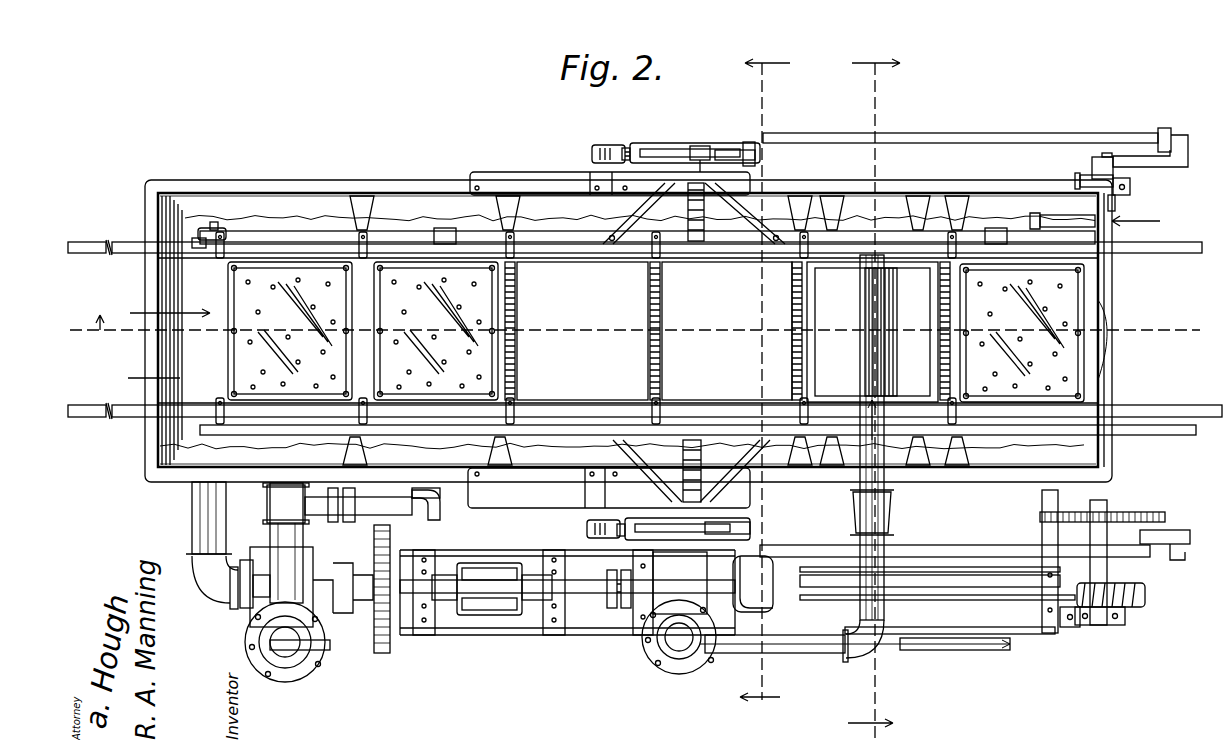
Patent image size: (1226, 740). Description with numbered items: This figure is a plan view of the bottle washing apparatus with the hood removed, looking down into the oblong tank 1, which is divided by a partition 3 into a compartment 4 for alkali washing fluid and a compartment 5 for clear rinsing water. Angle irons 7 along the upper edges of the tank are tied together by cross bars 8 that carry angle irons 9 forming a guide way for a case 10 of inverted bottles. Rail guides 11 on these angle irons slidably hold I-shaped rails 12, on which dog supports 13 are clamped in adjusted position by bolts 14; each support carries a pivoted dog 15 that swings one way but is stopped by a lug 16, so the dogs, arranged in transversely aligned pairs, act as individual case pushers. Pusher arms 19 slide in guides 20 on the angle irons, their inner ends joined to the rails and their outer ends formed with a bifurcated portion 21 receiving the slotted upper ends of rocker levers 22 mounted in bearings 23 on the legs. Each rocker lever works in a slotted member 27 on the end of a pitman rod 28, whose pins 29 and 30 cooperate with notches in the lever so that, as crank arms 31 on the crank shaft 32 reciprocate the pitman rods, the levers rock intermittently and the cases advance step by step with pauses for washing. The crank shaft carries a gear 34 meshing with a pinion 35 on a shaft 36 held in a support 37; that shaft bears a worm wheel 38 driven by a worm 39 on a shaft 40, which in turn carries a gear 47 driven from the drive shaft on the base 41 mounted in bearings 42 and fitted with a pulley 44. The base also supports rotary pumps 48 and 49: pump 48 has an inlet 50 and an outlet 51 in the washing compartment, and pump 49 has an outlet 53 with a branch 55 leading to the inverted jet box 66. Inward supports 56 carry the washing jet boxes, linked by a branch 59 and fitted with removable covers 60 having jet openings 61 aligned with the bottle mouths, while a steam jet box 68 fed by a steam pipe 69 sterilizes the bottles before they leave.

The tank 1 is at (180, 205).
The partition 3 is at (635, 330).
The compartment 4 is at (492, 382).
The compartment 5 is at (898, 206).
The angle irons 7 is at (400, 182).
The cross bars 8 is at (150, 358).
The angle irons 9 is at (76, 252).
The case 10 is at (810, 365).
The rail guides 11 is at (230, 238).
The rails 12 is at (300, 240).
The dog supports 13 is at (790, 240).
The bolts 14 is at (215, 228).
The dogs 15 is at (215, 250).
The lugs 16 is at (290, 232).
The pusher arms 19 is at (625, 213).
The guides 20 is at (515, 165).
The bifurcated portion 21 is at (700, 146).
The rocker levers 22 is at (592, 152).
The bearings 23 is at (610, 148).
The slotted member 27 is at (688, 145).
The pitman rods 28 is at (935, 140).
The pin 29 is at (644, 143).
The pin 30 is at (750, 148).
The crank arms 31 is at (1140, 158).
The crank shaft 32 is at (1105, 153).
The gear 34 is at (1140, 520).
The pinion 35 is at (1120, 512).
The shaft 36 is at (1115, 578).
The support 37 is at (1070, 628).
The worm wheel 38 is at (1140, 596).
The worm 39 is at (1126, 616).
The shaft 40 is at (1000, 620).
The base 41 is at (605, 635).
The bearings 42 is at (436, 635).
The pulley 44 is at (490, 615).
The gear 47 is at (377, 655).
The pump 48 is at (310, 675).
The pump 49 is at (700, 675).
The inlet 50 is at (226, 590).
The outlet 51 is at (278, 665).
The outlet 53 is at (658, 668).
The branch 55 is at (888, 540).
The supports 56 is at (650, 352).
The branch 59 is at (432, 520).
The covers 60 is at (238, 292).
The jet openings 61 is at (278, 350).
The inverted jet box 66 is at (840, 340).
The steam jet box 68 is at (1110, 375).
The steam pipe 69 is at (1110, 215).